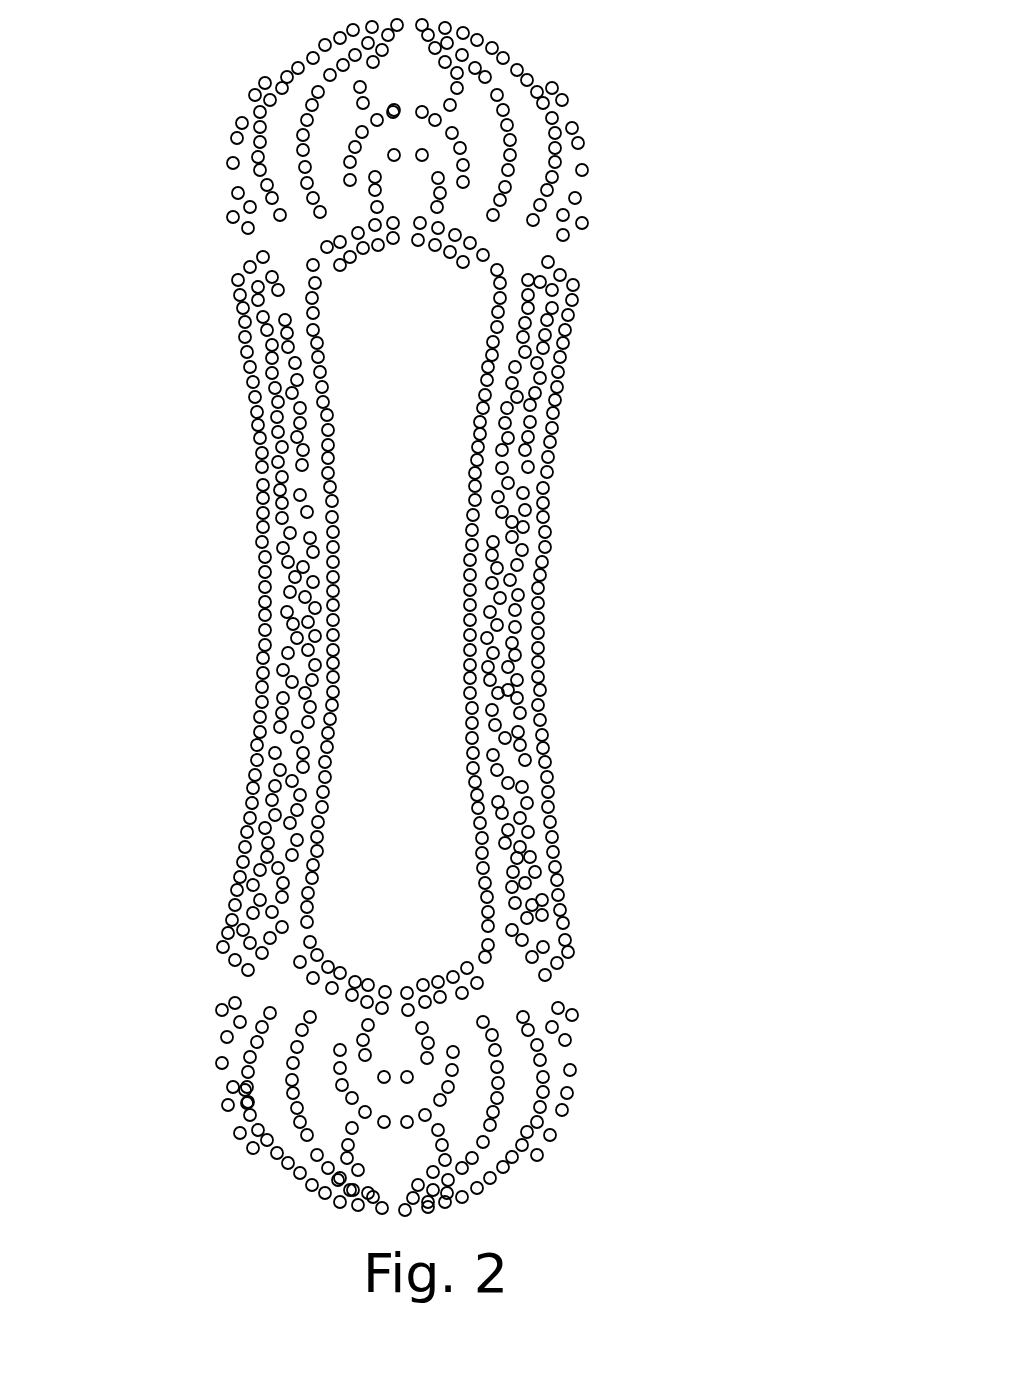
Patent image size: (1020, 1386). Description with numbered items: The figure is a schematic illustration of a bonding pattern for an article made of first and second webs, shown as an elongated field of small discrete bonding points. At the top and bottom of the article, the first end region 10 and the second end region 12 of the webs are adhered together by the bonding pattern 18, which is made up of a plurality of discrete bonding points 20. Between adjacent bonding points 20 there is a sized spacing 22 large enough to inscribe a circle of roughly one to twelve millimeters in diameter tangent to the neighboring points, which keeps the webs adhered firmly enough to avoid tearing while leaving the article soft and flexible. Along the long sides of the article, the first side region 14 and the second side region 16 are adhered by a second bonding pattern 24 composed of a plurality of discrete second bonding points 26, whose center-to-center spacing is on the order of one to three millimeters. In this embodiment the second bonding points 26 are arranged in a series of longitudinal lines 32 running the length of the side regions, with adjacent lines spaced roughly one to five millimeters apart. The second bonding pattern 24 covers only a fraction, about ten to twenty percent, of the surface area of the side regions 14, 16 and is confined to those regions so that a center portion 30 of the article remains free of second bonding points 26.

The first end region 10 is at (640, 46).
The second end region 12 is at (235, 112).
The first side region 14 is at (213, 611).
The second side region 16 is at (590, 567).
The bonding pattern 18 is at (270, 1090).
The bonding point 20 is at (253, 1155).
The sized spacing 22 is at (570, 1040).
The second bonding pattern 24 is at (540, 362).
The second bonding point 26 is at (576, 300).
The center portion 30 is at (395, 545).
The longitudinal line 32 is at (512, 690).